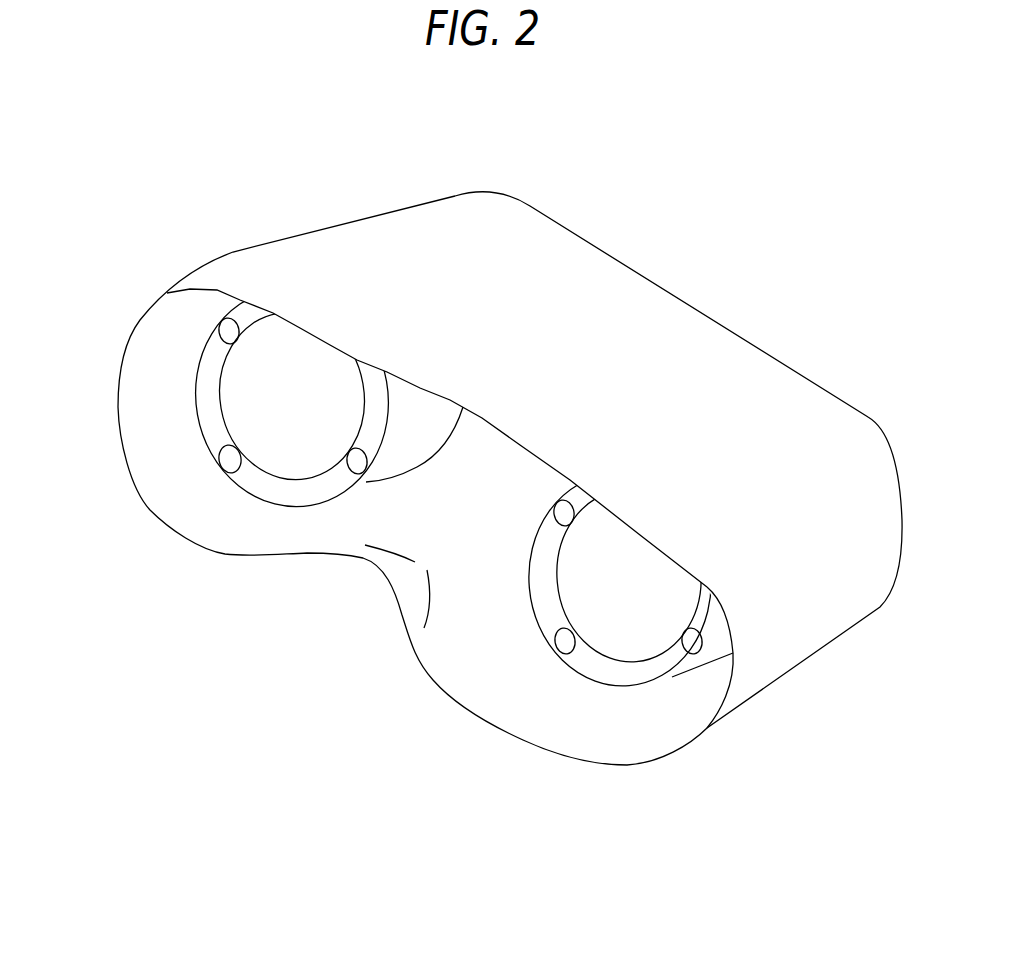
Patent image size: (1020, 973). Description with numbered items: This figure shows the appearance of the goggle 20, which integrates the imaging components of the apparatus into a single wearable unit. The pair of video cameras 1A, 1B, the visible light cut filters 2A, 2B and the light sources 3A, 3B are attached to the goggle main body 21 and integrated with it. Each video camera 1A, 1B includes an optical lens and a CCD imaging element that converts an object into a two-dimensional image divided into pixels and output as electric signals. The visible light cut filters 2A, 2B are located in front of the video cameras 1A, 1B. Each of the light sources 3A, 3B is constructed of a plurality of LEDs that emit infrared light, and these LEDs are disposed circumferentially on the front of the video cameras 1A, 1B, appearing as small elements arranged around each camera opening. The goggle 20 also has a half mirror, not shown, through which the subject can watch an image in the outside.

The goggle 20 is at (778, 330).
The goggle main body 21 is at (557, 247).
The video camera 1A is at (287, 503).
The visible light cut filter 2A is at (245, 393).
The light source 3A is at (235, 320).
The video camera 1B is at (655, 687).
The visible light cut filter 2B is at (622, 653).
The light source 3B is at (556, 504).